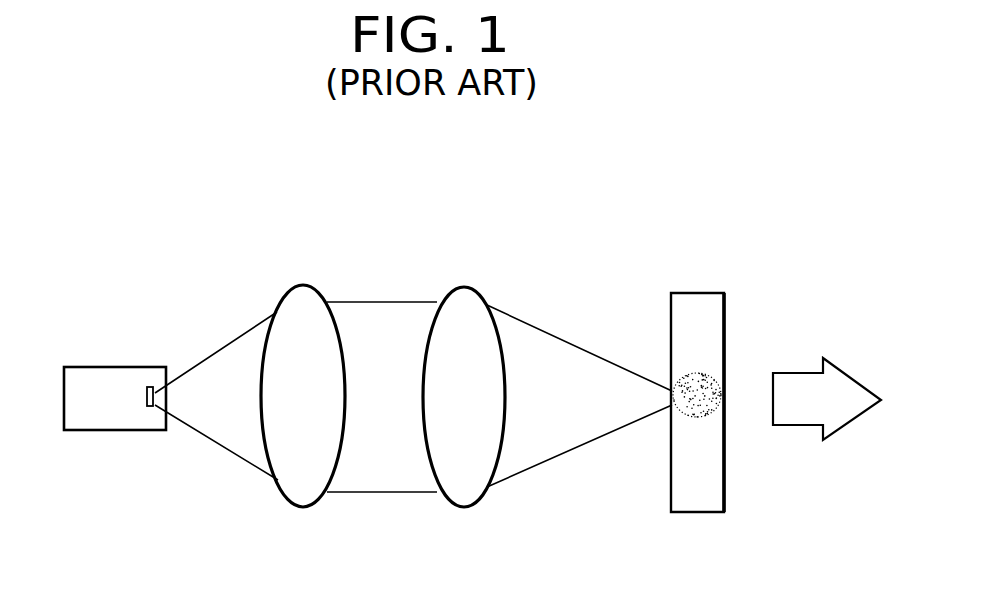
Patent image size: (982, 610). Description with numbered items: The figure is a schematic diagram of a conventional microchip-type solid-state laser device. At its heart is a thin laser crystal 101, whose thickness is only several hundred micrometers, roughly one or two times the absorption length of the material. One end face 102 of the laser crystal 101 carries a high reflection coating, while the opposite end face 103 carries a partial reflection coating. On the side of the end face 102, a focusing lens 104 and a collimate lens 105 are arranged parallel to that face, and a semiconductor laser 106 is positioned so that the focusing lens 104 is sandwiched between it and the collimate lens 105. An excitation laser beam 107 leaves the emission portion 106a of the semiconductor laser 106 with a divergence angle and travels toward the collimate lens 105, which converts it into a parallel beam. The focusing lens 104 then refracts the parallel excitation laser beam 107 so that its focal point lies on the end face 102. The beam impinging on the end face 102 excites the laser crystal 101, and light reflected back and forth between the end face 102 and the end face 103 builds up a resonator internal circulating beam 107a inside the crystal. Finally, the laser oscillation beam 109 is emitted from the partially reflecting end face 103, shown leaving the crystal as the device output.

The laser crystal 101 is at (703, 500).
The end face 102 is at (672, 305).
The end face 103 is at (724, 308).
The focusing lens 104 is at (470, 485).
The collimate lens 105 is at (313, 492).
The semiconductor laser 106 is at (95, 370).
The emission portion 106a is at (150, 404).
The excitation laser beam 107 is at (227, 360).
The resonator internal circulating beam 107a is at (708, 410).
The laser oscillation beam 109 is at (857, 378).